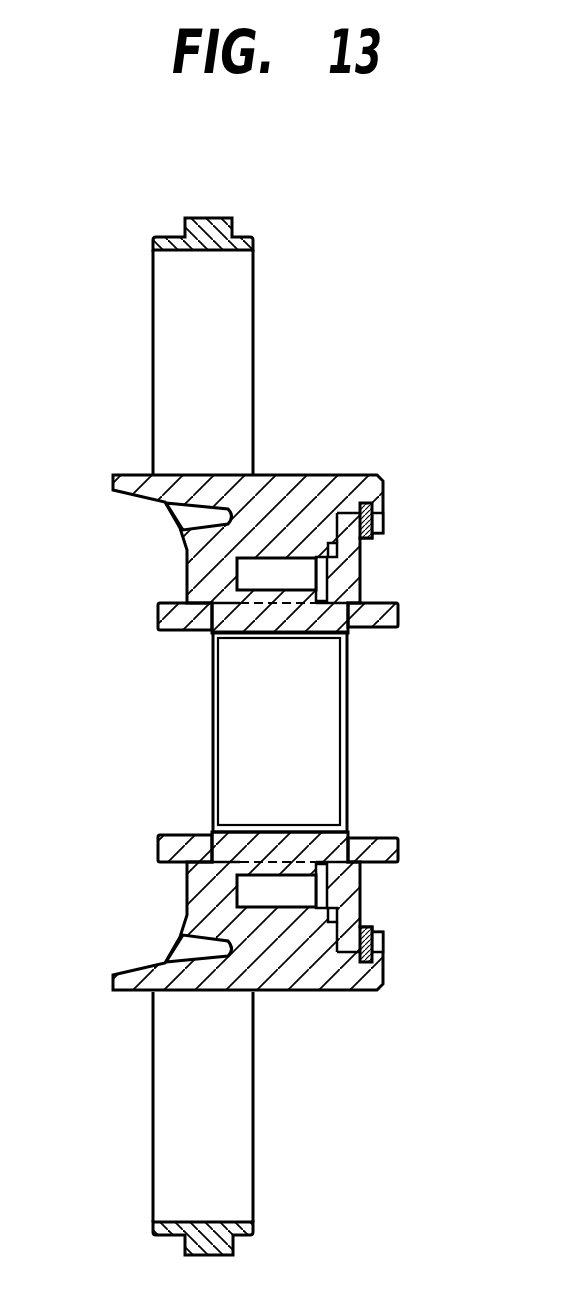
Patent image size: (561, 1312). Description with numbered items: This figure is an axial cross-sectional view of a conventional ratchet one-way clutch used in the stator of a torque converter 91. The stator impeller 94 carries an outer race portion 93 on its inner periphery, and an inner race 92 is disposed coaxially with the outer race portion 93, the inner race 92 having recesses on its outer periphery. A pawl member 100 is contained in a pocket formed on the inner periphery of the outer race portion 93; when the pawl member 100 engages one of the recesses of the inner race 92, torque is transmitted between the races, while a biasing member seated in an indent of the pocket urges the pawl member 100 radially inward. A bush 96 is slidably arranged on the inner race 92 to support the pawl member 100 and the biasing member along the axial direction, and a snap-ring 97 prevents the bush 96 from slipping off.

The torque converter 91 is at (353, 187).
The inner race 92 is at (345, 815).
The outer race portion 93 is at (310, 520).
The stator impeller 94 is at (164, 315).
The bush 96 is at (398, 616).
The snap-ring 97 is at (374, 522).
The pawl member 100 is at (268, 575).